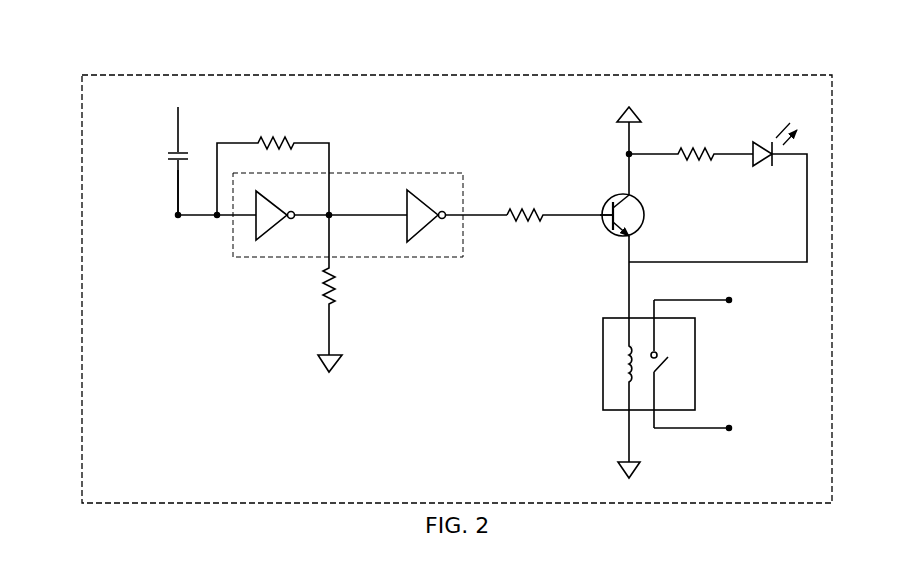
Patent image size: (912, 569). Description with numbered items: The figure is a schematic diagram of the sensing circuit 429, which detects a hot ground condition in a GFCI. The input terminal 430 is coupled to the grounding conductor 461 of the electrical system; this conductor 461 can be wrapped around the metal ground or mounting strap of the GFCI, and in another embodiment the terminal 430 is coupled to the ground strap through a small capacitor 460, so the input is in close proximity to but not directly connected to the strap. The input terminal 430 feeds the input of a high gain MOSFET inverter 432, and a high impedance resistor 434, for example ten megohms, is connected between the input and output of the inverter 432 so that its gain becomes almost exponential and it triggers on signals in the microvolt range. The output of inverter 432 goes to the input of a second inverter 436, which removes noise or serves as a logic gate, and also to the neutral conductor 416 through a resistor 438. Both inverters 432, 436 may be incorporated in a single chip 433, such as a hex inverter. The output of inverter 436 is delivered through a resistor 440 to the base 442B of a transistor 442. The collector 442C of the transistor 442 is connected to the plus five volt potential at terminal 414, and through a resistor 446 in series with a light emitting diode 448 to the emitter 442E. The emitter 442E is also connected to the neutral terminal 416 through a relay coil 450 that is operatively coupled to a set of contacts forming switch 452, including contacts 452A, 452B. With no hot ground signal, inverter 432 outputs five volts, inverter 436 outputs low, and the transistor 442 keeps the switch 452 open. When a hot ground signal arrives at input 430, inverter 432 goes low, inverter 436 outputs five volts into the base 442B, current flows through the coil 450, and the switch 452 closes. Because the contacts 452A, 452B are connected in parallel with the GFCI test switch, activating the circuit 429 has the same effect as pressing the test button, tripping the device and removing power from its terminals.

The sensing circuit 429 is at (116, 50).
The capacitor 460 is at (170, 156).
The conductor 461 is at (178, 190).
The input terminal 430 is at (178, 218).
The resistor 434 is at (274, 140).
The single chip 433 is at (381, 172).
The inverter 432 is at (272, 233).
The inverter 436 is at (424, 200).
The resistor 438 is at (337, 284).
The neutral conductor 416 is at (339, 363).
The base resistor 440 is at (521, 228).
The terminal 414 is at (618, 114).
The transistor 442 is at (627, 218).
The base 442B is at (606, 210).
The collector 442C is at (652, 186).
The emitter terminal 442E is at (654, 252).
The resistor 446 is at (700, 146).
The light emitting diode 448 is at (764, 164).
The relay coil 450 is at (625, 366).
The switch 452 is at (665, 361).
The contact 452A is at (731, 300).
The contact 452B is at (731, 428).